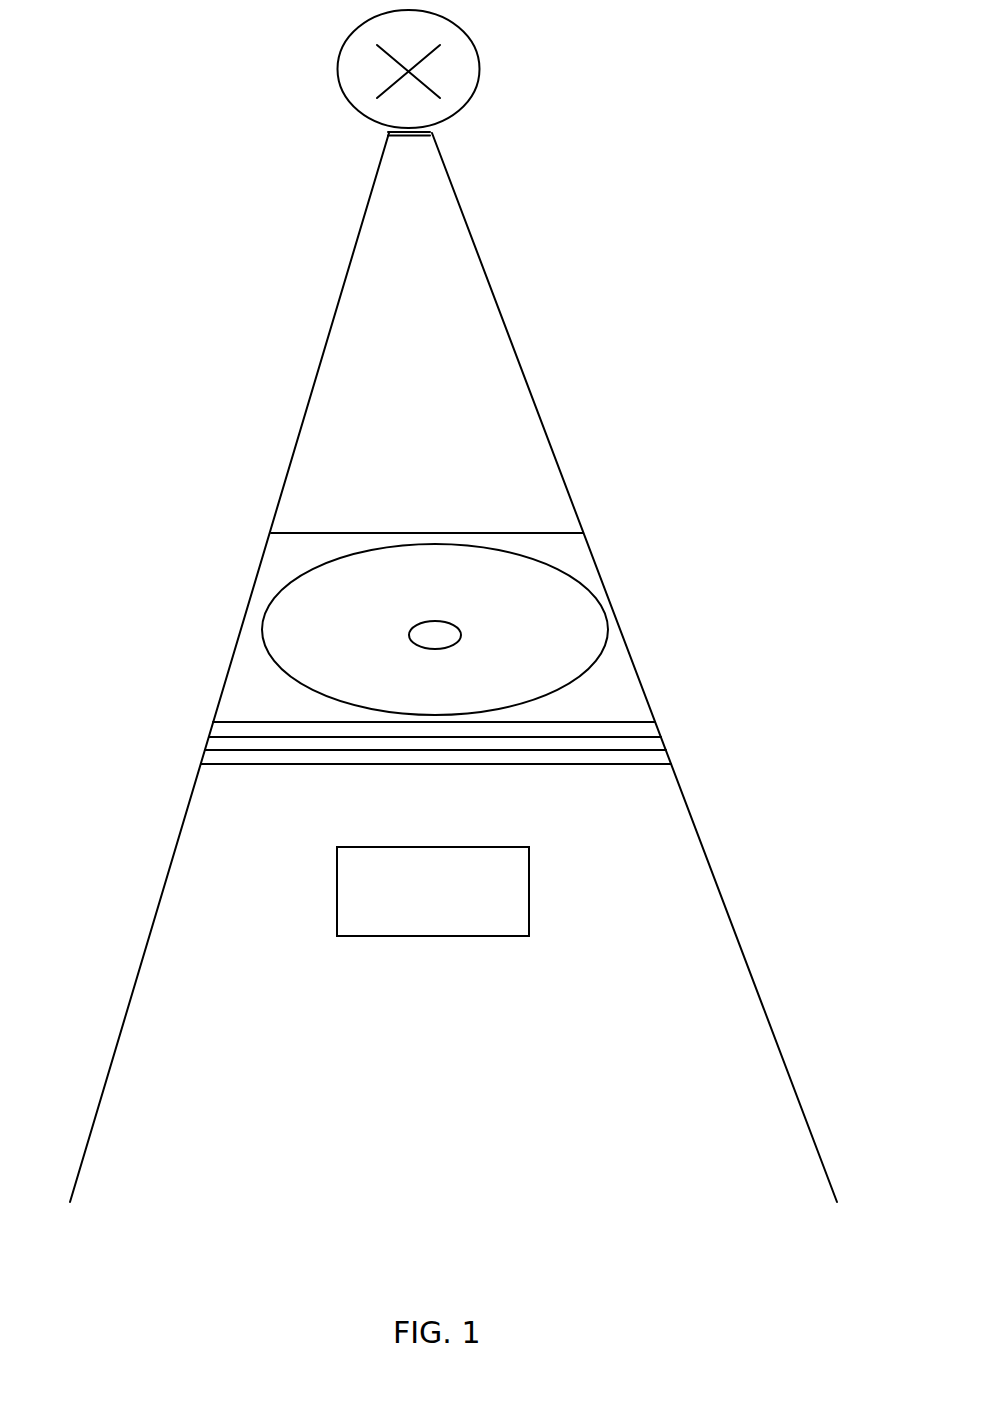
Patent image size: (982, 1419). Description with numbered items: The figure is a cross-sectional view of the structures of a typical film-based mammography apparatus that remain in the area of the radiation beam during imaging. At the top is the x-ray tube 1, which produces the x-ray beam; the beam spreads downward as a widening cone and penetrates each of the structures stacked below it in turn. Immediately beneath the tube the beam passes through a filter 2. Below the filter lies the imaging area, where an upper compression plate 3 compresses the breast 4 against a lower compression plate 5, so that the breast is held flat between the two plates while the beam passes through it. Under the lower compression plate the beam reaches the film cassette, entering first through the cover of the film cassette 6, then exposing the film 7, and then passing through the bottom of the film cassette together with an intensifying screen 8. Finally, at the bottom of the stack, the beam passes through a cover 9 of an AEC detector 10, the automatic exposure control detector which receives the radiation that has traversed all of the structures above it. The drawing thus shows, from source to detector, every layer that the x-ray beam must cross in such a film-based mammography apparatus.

The x-ray tube 1 is at (457, 23).
The filter 2 is at (430, 128).
The upper compression plate 3 is at (566, 533).
The breast 4 is at (588, 602).
The lower compression plate 5 is at (650, 715).
The cover of a film cassette 6 is at (657, 737).
The film 7 is at (637, 750).
The bottom of a film cassette together with an intensifying screen 8 is at (603, 764).
The cover of an AEC detector 9 is at (520, 847).
The AEC detector 10 is at (527, 900).